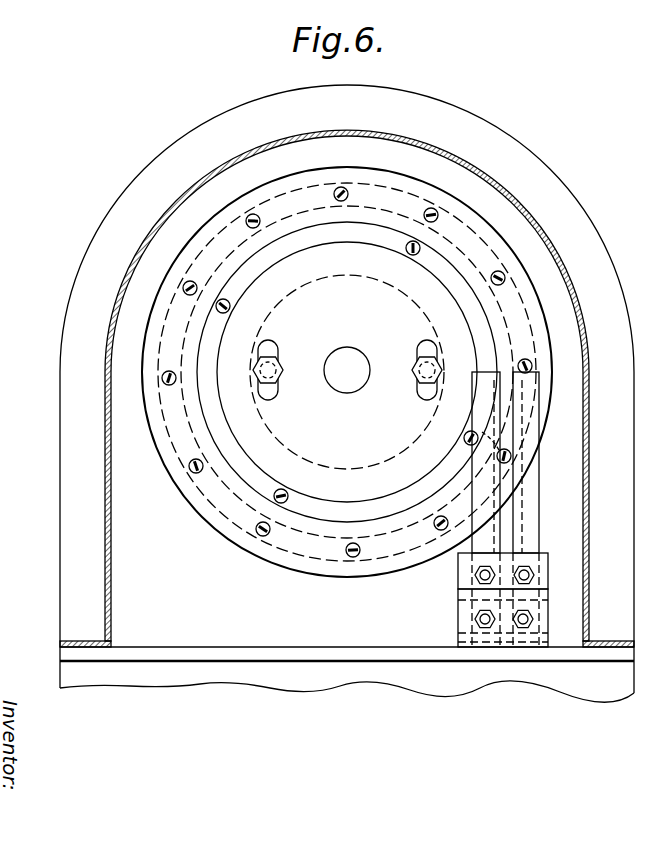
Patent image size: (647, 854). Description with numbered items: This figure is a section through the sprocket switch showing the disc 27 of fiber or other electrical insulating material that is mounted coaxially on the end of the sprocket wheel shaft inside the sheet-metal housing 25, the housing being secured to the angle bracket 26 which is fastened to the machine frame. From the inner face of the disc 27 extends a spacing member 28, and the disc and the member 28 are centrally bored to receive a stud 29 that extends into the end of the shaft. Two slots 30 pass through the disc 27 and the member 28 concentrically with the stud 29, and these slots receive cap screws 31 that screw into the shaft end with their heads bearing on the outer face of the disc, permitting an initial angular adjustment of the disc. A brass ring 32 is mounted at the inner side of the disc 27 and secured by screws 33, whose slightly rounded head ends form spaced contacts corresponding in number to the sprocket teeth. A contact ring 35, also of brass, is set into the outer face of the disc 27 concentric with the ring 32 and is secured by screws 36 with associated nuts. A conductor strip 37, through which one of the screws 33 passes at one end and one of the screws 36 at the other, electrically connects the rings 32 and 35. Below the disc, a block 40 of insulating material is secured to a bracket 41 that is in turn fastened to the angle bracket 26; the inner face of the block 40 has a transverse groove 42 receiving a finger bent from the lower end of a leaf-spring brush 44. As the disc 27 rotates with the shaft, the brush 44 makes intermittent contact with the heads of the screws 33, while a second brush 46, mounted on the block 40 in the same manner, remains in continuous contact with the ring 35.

The housing 25 is at (587, 310).
The angle bracket 26 is at (282, 672).
The disc 27 is at (331, 567).
The spacing member 28 is at (373, 463).
The stud 29 is at (345, 352).
The slots 30 is at (272, 346).
The cap screws 31 is at (283, 380).
The ring 32 is at (272, 560).
The screws 33 is at (257, 529).
The contact ring 35 is at (302, 500).
The screws 36 is at (503, 452).
The conductor strip 37 is at (463, 442).
The block 40 is at (462, 573).
The bracket 41 is at (460, 626).
The groove 42 is at (458, 600).
The brush 44 is at (540, 517).
The second brush 46 is at (468, 495).